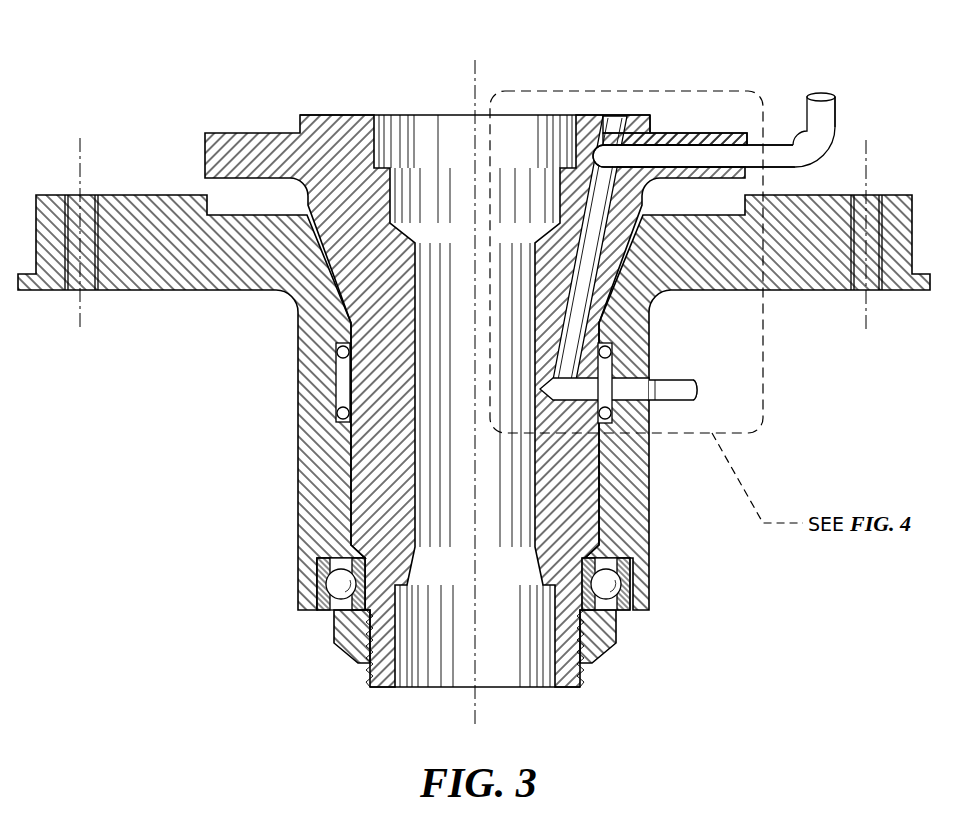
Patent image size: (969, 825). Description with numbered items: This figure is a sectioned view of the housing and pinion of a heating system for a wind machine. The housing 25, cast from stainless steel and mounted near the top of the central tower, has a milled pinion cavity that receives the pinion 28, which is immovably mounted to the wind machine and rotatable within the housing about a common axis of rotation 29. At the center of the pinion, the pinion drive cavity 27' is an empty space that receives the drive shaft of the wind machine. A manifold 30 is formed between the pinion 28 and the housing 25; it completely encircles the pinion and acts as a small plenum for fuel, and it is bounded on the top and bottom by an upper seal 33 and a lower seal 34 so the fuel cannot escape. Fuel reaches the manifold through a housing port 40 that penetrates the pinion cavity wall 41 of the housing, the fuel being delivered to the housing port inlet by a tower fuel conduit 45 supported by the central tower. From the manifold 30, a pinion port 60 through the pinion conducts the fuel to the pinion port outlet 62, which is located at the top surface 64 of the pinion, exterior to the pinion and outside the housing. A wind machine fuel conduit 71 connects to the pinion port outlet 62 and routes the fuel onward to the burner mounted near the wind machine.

The housing 25 is at (817, 276).
The pinion drive cavity 27' is at (475, 672).
The pinion 28 is at (287, 152).
The common axis of rotation 29 is at (474, 93).
The manifold 30 is at (342, 383).
The upper seal 33 is at (336, 352).
The lower seal 34 is at (336, 414).
The housing port 40 is at (638, 387).
The pinion cavity wall 41 is at (631, 352).
The tower fuel conduit 45 is at (673, 394).
The pinion port 60 is at (654, 122).
The pinion port outlet 62 is at (733, 150).
The top surface of the pinion 64 is at (713, 134).
The wind machine fuel conduit 71 is at (777, 150).